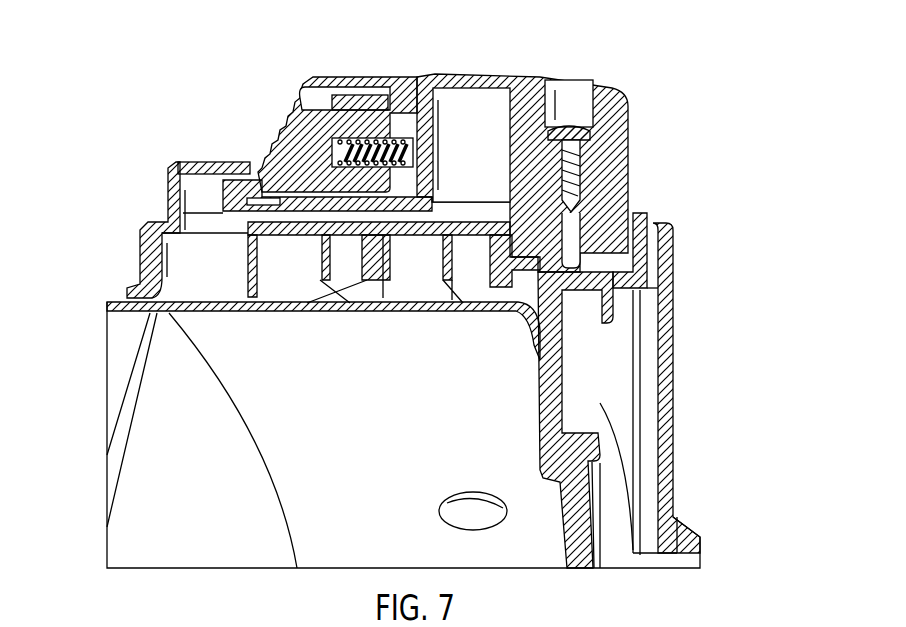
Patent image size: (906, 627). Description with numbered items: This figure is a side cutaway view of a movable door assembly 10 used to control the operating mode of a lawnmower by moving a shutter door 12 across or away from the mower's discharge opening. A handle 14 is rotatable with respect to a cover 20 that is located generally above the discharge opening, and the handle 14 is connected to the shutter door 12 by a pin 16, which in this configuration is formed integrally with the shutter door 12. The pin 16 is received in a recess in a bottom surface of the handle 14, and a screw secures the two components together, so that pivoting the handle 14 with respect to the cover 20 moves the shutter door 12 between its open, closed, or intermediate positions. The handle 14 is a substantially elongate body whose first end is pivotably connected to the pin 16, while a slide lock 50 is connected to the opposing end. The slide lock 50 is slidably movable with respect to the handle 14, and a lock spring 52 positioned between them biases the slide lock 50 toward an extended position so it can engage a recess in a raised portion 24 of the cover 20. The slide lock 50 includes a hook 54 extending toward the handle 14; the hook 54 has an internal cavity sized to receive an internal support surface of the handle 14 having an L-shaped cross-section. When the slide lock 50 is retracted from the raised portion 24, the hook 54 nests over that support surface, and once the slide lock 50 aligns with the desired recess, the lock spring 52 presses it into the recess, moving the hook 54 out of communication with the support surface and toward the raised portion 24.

The door assembly 10 is at (695, 62).
The shutter door 12 is at (583, 540).
The handle 14 is at (488, 78).
The pin 16 is at (581, 318).
The cover 20 is at (140, 258).
The raised portion 24 is at (178, 162).
The slide lock 50 is at (305, 81).
The lock spring 52 is at (393, 138).
The hook 54 is at (222, 187).